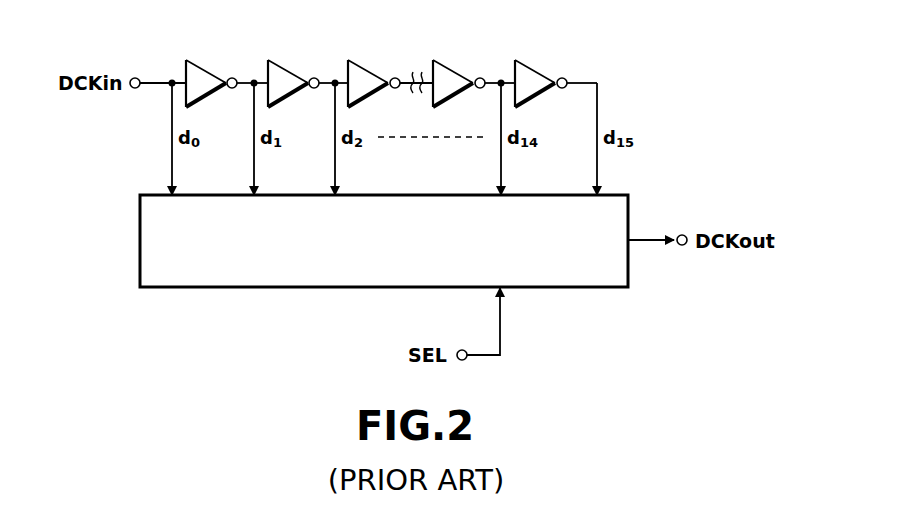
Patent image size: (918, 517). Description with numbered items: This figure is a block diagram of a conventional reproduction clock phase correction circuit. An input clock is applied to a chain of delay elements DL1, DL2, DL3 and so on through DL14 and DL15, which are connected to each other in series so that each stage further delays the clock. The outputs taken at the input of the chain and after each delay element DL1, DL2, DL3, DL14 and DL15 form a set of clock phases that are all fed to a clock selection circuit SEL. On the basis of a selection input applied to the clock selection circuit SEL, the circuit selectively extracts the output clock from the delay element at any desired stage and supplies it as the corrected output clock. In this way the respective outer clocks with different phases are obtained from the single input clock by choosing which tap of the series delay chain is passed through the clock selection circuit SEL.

The delay element DL1 is at (215, 75).
The delay element DL2 is at (297, 75).
The delay element DL3 is at (377, 75).
The delay element DL14 is at (460, 75).
The delay element DL15 is at (542, 75).
The clock selection circuit SEL is at (210, 288).